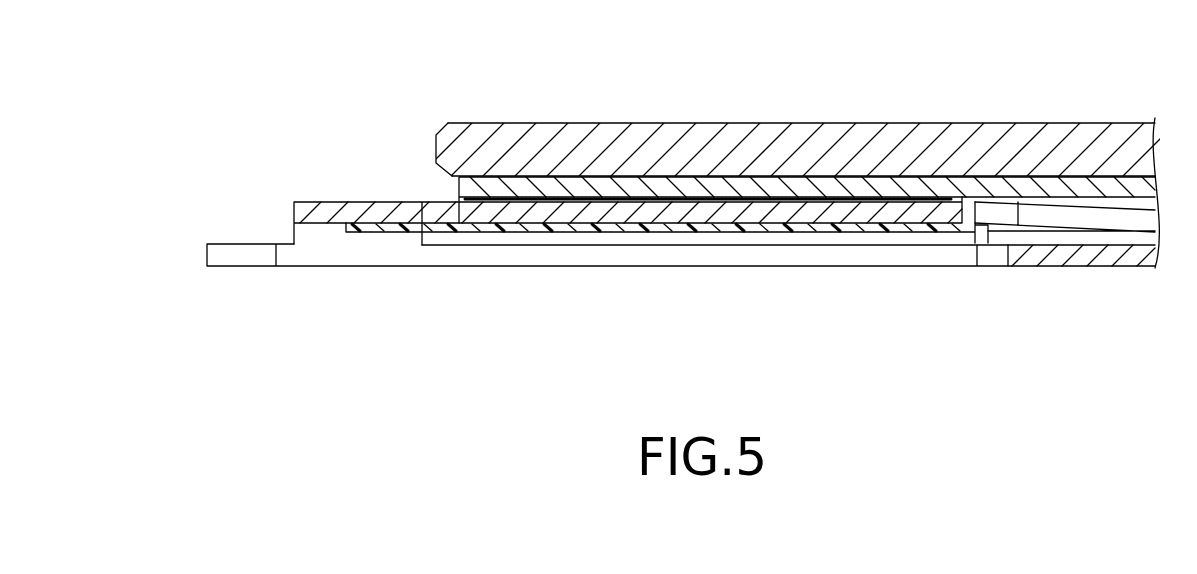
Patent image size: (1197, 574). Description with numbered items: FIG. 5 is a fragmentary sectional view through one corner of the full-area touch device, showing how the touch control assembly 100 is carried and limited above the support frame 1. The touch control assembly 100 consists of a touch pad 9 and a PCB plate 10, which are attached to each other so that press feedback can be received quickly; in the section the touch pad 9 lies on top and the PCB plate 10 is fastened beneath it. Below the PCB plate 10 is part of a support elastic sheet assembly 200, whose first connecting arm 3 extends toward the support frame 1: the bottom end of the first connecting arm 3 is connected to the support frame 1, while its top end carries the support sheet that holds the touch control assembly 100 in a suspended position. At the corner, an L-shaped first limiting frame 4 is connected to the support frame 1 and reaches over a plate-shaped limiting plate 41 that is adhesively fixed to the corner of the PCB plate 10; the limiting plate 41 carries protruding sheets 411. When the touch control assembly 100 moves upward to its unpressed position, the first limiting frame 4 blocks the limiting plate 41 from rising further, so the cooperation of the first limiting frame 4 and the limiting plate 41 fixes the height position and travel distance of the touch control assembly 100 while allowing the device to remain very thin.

The touch control assembly 100 is at (445, 127).
The touch pad 9 is at (538, 148).
The PCB plate 10 is at (726, 190).
The first limiting frame 4 is at (302, 210).
The limiting plate 41 is at (687, 232).
The protruding sheet 411 is at (373, 232).
The support frame 1 is at (233, 245).
The support elastic sheet assembly 200 is at (857, 212).
The first connecting arm 3 is at (1072, 218).